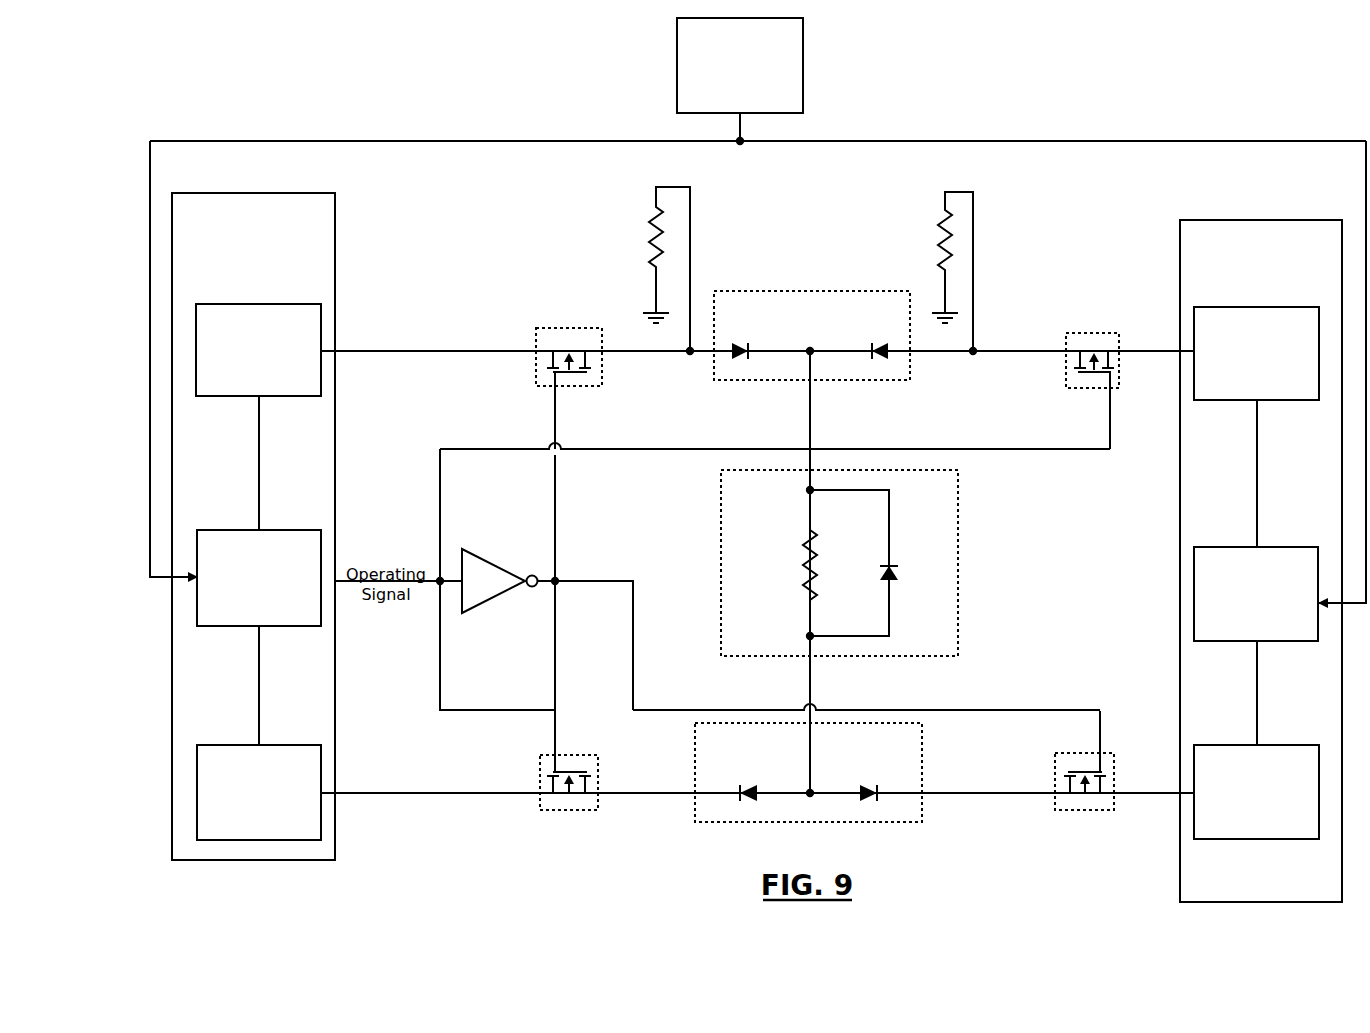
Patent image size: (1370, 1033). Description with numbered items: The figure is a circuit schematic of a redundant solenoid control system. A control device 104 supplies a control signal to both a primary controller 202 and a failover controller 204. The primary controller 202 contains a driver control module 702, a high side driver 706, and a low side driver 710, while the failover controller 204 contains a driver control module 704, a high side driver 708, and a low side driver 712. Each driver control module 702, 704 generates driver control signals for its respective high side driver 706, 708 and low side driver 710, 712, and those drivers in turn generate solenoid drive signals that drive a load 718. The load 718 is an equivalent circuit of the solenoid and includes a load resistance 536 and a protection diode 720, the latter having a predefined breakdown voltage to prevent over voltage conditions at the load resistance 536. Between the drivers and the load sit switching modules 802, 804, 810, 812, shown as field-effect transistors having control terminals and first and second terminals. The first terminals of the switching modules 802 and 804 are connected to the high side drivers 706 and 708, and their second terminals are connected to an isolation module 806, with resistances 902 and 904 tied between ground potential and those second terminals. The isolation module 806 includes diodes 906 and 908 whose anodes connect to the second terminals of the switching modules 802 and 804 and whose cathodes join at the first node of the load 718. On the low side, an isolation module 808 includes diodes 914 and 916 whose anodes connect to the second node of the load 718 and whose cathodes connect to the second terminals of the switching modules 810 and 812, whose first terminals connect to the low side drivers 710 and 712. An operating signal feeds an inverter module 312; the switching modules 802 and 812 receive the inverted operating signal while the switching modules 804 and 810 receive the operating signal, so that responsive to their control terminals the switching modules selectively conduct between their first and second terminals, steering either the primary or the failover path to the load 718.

The control device 104 is at (677, 70).
The primary controller 202 is at (248, 193).
The failover controller 204 is at (1276, 220).
The inverter module 312 is at (474, 549).
The load resistance 536 is at (792, 574).
The driver control module 702 is at (237, 530).
The driver control module 704 is at (1244, 547).
The high side driver 706 is at (242, 396).
The high side driver 708 is at (1242, 400).
The low side driver 710 is at (238, 745).
The low side driver 712 is at (1238, 745).
The load 718 is at (873, 563).
The protection diode 720 is at (894, 574).
The switching module 802 is at (568, 328).
The switching module 804 is at (1090, 333).
The isolation module 806 is at (812, 315).
The isolation module 808 is at (808, 794).
The switching module 810 is at (563, 810).
The switching module 812 is at (1069, 810).
The resistance 902 is at (651, 232).
The resistance 904 is at (938, 234).
The diode 906 is at (740, 341).
The diode 908 is at (880, 341).
The diode 914 is at (749, 785).
The diode 916 is at (868, 785).